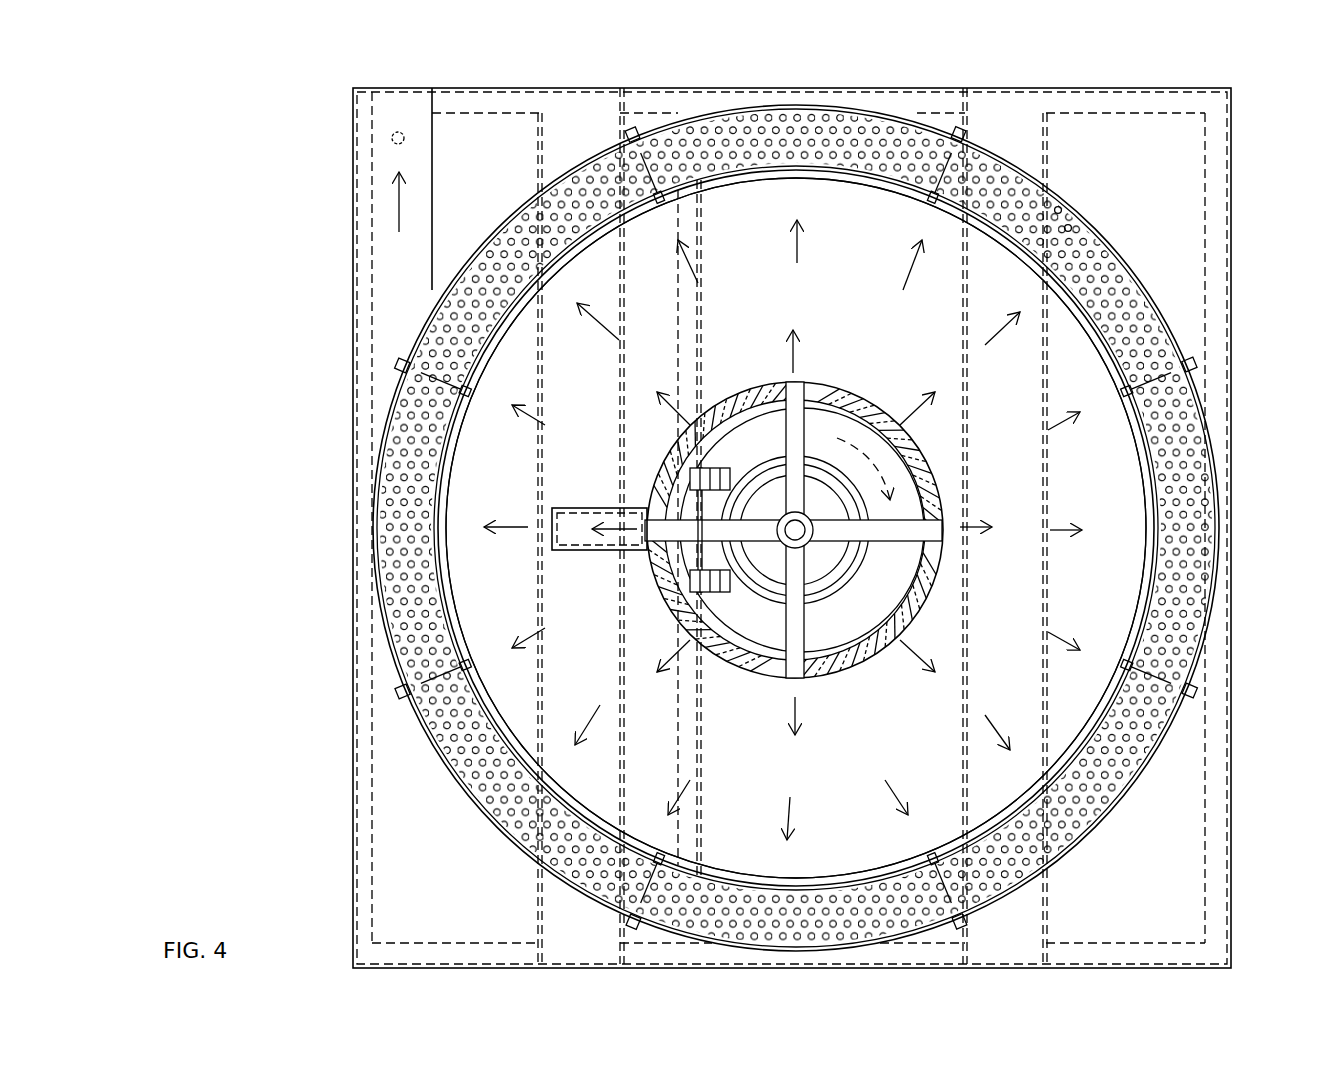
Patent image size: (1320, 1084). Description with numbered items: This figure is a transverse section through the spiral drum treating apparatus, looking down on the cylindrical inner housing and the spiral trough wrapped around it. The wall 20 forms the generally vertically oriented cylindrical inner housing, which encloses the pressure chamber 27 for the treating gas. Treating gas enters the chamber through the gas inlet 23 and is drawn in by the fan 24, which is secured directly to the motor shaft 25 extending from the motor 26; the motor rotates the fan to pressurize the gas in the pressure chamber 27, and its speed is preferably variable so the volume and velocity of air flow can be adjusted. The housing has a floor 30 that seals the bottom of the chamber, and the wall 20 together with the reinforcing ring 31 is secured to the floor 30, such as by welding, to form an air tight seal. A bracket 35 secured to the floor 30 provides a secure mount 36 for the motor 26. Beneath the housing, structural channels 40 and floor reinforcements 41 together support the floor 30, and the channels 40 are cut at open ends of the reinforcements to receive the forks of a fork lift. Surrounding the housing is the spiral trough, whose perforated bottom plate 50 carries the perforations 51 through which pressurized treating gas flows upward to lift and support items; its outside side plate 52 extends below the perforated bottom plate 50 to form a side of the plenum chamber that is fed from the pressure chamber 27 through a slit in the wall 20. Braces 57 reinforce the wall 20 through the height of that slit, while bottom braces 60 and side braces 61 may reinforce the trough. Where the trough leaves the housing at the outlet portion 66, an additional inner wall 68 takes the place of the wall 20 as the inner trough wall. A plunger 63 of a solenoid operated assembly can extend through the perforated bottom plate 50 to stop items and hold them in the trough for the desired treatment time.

The wall 20 is at (1150, 470).
The gas inlet 23 is at (763, 628).
The fan 24 is at (856, 395).
The motor shaft 25 is at (808, 538).
The motor 26 is at (852, 556).
The pressure chamber 27 is at (863, 296).
The floor 30 is at (398, 880).
The reinforcing ring 31 is at (731, 180).
The bracket 35 is at (583, 550).
The mount 36 is at (707, 450).
The structural channels 40 is at (1232, 873).
The floor reinforcements 41 is at (538, 478).
The perforated bottom plate 50 is at (1102, 253).
The perforations 51 is at (1068, 228).
The outside side plate 52 is at (470, 815).
The braces 57 is at (933, 200).
The bottom braces 60 is at (1128, 622).
The side braces 61 is at (628, 133).
The plunger 63 is at (395, 137).
The outlet portion 66 is at (393, 280).
The inner wall 68 is at (432, 195).